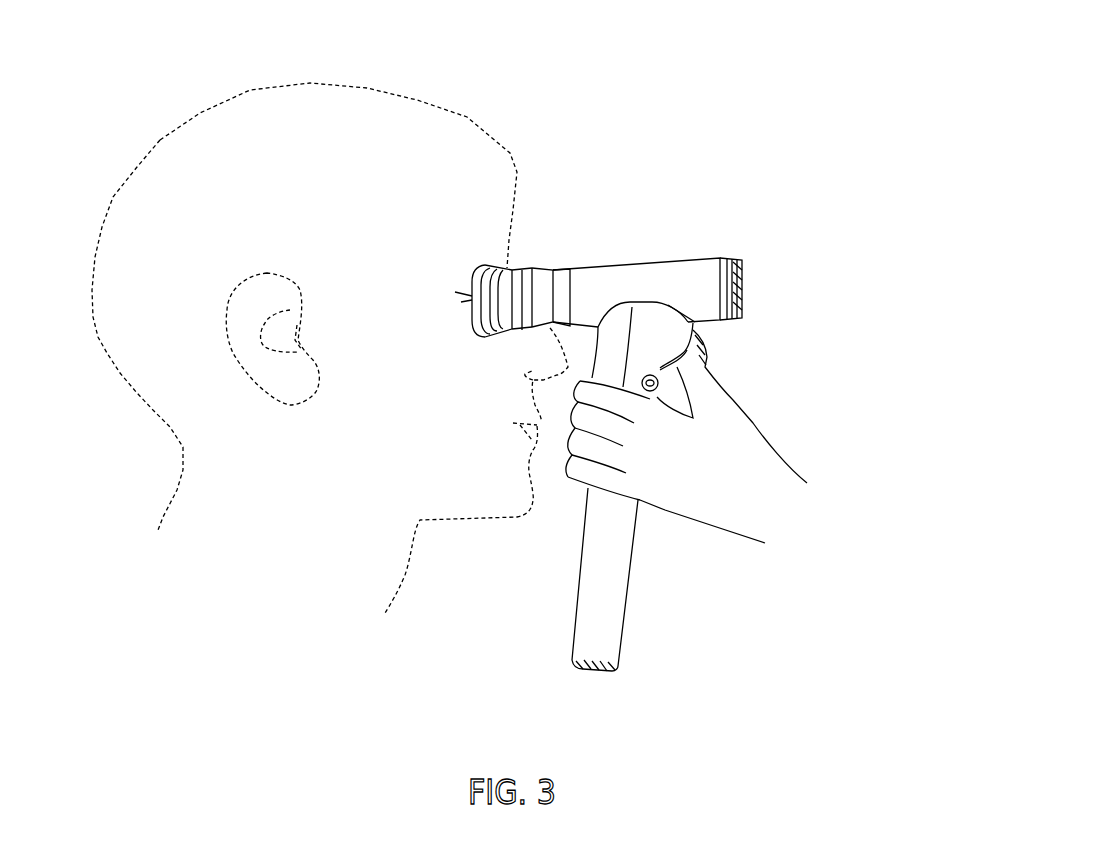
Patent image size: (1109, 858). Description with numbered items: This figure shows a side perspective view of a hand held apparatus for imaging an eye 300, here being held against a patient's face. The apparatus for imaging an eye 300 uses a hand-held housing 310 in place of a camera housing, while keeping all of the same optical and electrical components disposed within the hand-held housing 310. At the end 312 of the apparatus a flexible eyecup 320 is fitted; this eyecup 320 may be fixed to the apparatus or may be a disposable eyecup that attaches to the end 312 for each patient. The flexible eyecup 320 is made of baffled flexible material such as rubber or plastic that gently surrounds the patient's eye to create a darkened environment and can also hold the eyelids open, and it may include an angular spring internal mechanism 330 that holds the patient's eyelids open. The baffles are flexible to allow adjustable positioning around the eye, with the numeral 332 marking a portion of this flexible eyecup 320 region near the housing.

The hand held apparatus for imaging an eye 300 is at (740, 193).
The hand-held housing 310 is at (665, 294).
The end of the apparatus 312 is at (568, 272).
The flexible eyecup 320 is at (542, 270).
The angular spring internal mechanism 330 is at (520, 270).
The flexible eye cup ring 332 is at (527, 270).